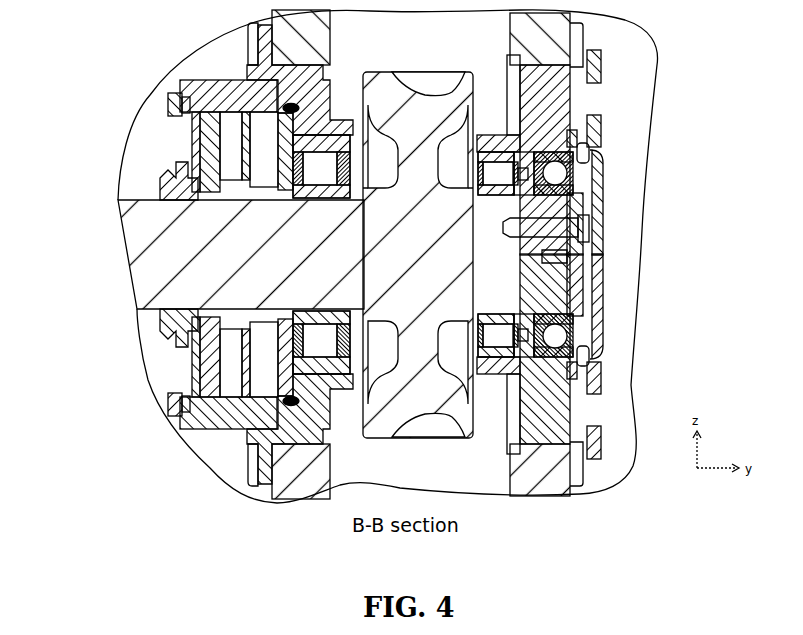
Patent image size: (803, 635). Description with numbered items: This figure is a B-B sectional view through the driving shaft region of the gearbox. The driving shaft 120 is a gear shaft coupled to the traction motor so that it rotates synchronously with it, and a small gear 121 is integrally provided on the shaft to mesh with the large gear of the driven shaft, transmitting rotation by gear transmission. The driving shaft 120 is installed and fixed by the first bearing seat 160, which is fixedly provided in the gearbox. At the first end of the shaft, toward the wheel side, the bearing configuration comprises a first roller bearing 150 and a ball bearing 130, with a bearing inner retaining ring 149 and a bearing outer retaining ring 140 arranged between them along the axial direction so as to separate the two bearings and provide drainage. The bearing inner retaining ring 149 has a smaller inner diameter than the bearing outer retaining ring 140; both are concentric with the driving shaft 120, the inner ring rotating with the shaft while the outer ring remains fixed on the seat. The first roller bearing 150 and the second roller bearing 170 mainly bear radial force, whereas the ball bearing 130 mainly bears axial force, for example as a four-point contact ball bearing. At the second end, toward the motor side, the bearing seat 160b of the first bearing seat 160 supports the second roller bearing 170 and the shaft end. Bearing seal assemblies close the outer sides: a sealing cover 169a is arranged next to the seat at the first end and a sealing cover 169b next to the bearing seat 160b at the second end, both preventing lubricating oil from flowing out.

The driving shaft 120 is at (124, 242).
The small gear 121 is at (433, 441).
The ball bearing 130 is at (604, 170).
The bearing outer retaining ring 140 is at (505, 140).
The bearing inner retaining ring 149 is at (526, 196).
The first roller bearing 150 is at (491, 197).
The first bearing seat 160 is at (572, 88).
The bearing seat 160b is at (322, 80).
The sealing cover 169a is at (604, 247).
The sealing cover 169b is at (202, 97).
The second roller bearing 170 is at (312, 200).